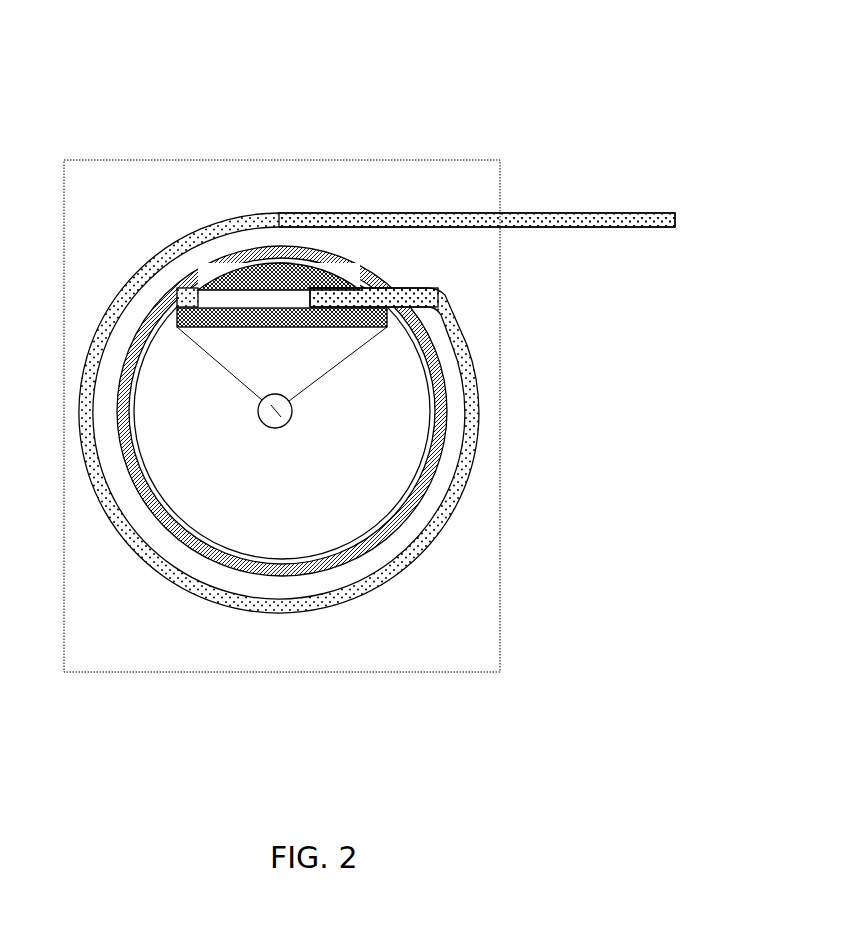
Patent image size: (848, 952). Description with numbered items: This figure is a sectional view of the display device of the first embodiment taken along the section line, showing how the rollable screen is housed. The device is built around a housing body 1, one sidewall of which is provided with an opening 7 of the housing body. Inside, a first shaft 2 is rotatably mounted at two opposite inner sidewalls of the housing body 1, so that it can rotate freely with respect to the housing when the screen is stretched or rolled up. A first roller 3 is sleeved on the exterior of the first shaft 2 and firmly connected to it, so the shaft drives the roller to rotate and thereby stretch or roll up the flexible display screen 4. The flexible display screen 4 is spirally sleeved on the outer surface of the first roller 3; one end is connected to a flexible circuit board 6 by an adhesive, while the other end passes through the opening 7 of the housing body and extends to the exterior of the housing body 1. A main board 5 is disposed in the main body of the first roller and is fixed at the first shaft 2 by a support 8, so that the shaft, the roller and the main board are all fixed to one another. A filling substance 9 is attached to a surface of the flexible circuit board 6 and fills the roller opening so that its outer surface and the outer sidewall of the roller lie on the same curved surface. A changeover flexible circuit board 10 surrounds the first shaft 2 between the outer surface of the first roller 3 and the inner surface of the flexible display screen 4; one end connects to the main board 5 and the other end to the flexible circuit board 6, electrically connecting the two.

The housing body 1 is at (330, 160).
The first shaft 2 is at (272, 422).
The first roller 3 is at (370, 488).
The flexible display screen 4 is at (477, 438).
The main board 5 is at (235, 315).
The flexible circuit board 6 is at (275, 297).
The opening of the housing body 7 is at (506, 237).
The support 8 is at (213, 355).
The filling substance 9 is at (306, 277).
The changeover flexible circuit board 10 is at (400, 508).